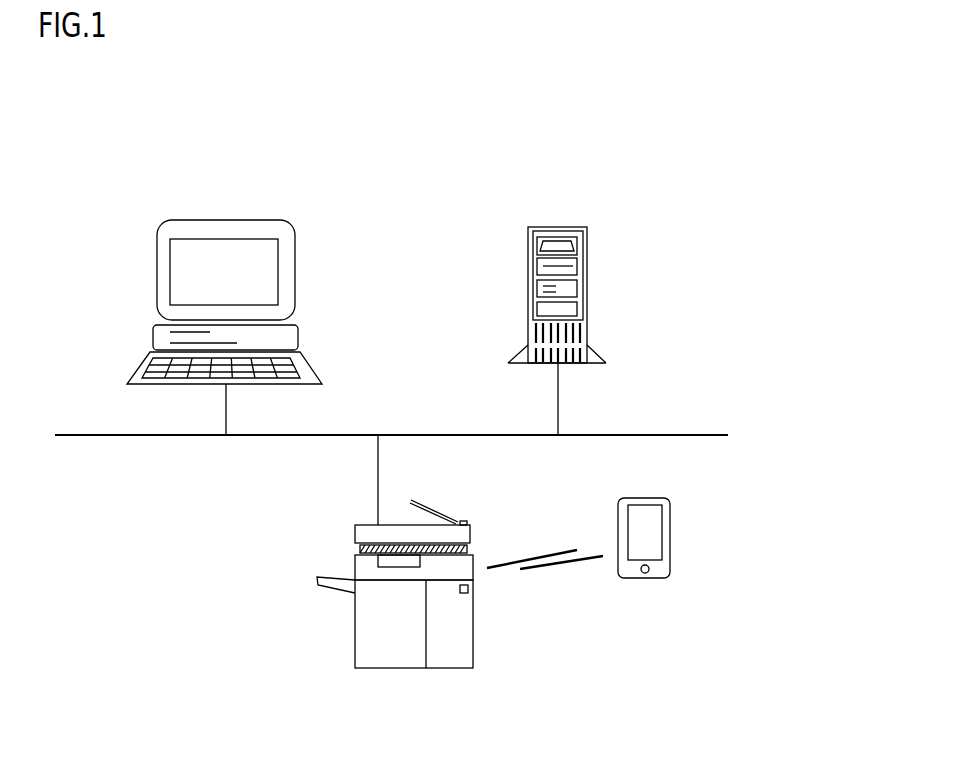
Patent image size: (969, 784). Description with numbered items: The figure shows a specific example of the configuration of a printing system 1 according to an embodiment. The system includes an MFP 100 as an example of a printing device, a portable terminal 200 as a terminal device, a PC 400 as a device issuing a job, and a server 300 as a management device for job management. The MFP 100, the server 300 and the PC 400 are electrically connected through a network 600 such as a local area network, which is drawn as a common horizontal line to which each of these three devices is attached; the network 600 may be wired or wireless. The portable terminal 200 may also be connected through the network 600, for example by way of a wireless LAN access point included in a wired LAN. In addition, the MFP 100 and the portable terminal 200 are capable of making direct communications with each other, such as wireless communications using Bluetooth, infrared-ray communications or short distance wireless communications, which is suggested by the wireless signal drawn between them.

The image forming system 1 is at (550, 98).
The MFP 100 is at (443, 668).
The portable terminal 200 is at (652, 498).
The server 300 is at (578, 227).
The PC 400 is at (248, 220).
The network 600 is at (715, 435).